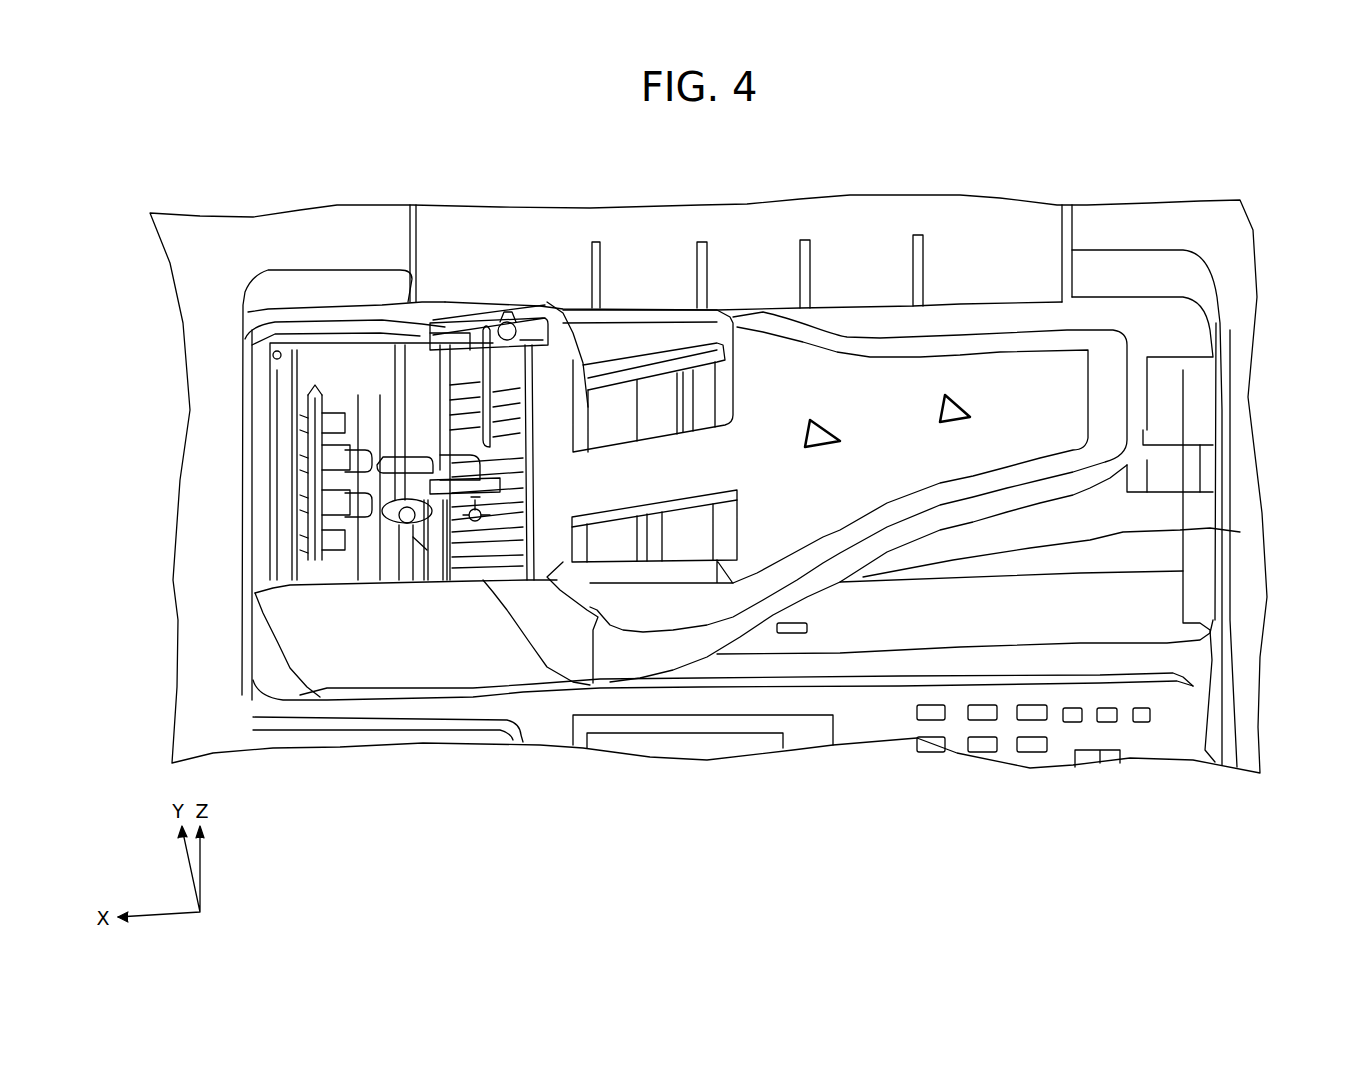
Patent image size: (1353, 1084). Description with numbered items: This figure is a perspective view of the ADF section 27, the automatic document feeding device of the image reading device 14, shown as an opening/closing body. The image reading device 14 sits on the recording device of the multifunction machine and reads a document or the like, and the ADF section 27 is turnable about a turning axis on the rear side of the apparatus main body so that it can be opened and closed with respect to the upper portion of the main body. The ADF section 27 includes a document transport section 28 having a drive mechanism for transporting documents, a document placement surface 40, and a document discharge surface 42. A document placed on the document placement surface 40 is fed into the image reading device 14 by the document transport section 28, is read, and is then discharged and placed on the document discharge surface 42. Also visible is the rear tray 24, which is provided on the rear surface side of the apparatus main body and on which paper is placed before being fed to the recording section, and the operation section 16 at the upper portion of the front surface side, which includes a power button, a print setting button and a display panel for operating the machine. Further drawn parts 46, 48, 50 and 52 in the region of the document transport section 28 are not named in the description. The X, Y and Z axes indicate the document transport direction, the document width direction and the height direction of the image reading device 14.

The image reading device 14 is at (306, 268).
The ADF section 27 is at (306, 268).
The slider bracket 48 is at (430, 407).
The lever 46 is at (478, 335).
The rear tray 24 is at (638, 235).
The document placement surface 40 is at (997, 370).
The document discharge surface 42 is at (1110, 510).
The connectors 52 is at (305, 515).
The roller 50 is at (380, 548).
The document transport section 28 is at (527, 533).
The operation section 16 is at (857, 727).